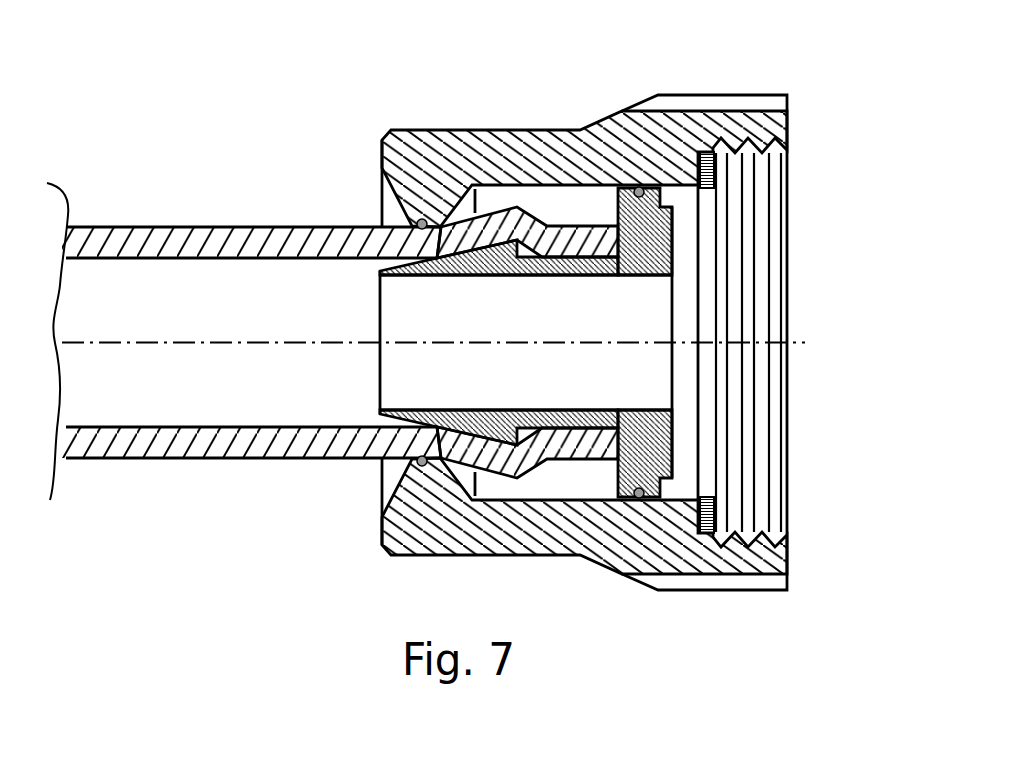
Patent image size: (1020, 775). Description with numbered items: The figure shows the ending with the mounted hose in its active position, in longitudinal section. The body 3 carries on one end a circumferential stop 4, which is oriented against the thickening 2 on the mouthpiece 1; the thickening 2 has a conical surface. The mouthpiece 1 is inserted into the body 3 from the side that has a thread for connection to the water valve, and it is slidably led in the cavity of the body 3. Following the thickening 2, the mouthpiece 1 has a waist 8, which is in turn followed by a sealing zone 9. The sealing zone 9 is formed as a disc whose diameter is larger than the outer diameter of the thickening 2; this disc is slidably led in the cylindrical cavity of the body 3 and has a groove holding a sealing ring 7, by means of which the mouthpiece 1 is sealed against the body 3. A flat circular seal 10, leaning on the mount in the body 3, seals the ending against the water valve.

The mouthpiece 1 is at (380, 300).
The thickening 2 is at (500, 248).
The body 3 is at (408, 128).
The circumferential stop 4 is at (438, 222).
The sealing ring 7 is at (648, 490).
The waist 8 is at (567, 250).
The sealing zone 9 is at (660, 192).
The flat circular seal 10 is at (714, 178).